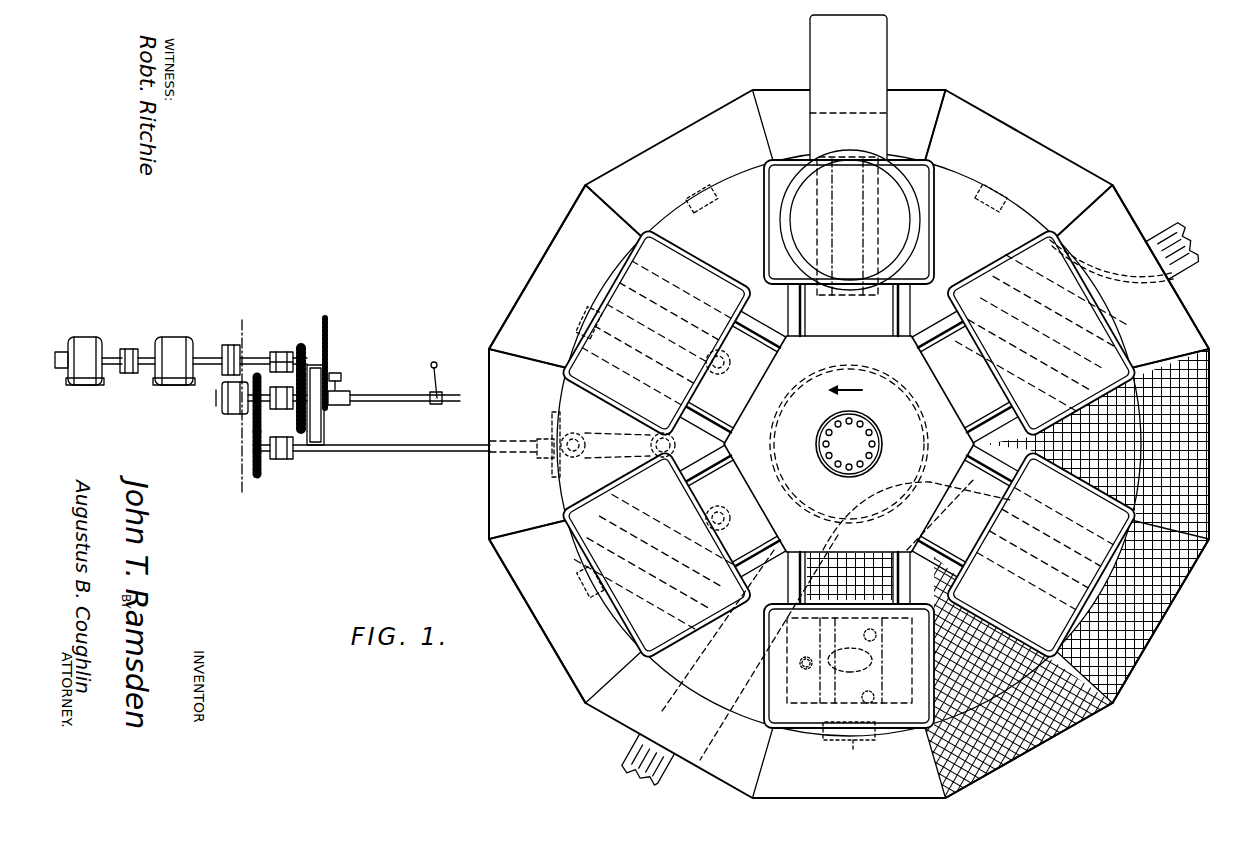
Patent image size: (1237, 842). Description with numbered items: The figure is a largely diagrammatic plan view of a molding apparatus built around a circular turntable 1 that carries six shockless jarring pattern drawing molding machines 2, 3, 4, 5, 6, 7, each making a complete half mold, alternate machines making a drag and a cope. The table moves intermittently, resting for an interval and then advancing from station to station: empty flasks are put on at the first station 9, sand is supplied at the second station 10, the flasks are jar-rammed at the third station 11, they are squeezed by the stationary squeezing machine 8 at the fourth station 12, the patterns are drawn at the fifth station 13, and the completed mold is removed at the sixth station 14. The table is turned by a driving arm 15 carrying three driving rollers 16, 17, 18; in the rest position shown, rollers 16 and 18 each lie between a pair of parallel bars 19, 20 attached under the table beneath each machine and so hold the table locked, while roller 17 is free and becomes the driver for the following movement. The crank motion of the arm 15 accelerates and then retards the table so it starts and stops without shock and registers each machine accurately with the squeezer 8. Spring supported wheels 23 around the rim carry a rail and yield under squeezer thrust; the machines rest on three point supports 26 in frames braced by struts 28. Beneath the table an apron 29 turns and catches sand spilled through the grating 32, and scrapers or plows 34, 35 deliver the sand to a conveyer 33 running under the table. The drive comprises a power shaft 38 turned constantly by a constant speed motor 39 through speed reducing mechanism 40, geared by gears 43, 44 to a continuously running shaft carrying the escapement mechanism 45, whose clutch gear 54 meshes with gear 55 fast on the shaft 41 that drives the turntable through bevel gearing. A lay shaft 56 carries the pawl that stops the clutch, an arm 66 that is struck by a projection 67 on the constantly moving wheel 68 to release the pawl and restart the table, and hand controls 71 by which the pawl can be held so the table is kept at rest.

The turntable 1 is at (849, 444).
The molding machine 2 is at (1041, 554).
The molding machine 3 is at (1041, 333).
The molding machine 4 is at (849, 222).
The molding machine 5 is at (657, 332).
The molding machine 6 is at (651, 557).
The molding machine 7 is at (849, 666).
The squeezing machine 8 is at (848, 89).
The first station 9 is at (851, 760).
The second station 10 is at (1097, 526).
The third station 11 is at (1133, 276).
The fourth station 12 is at (916, 126).
The fifth station 13 is at (566, 276).
The sixth station 14 is at (590, 600).
The driving arm 15 is at (600, 452).
The driving roller 16 is at (726, 515).
The driving roller 17 is at (577, 438).
The driving roller 18 is at (729, 365).
The parallel bar 19 is at (695, 325).
The parallel bar 20 is at (625, 350).
The spring supported wheels 23 is at (706, 185).
The three point supports 26 is at (868, 640).
The struts 28 is at (789, 310).
The apron 29 is at (972, 328).
The grating 32 is at (1073, 703).
The conveyer 33 is at (1168, 238).
The scraper or plow 34 is at (1100, 262).
The scraper or plow 35 is at (940, 478).
The power shaft 38 is at (255, 355).
The constant speed motor 39 is at (87, 338).
The speed reducing mechanism 40 is at (167, 338).
The turntable drive shaft 41 is at (445, 452).
The gear 43 is at (300, 348).
The gear 44 is at (296, 420).
The escapement mechanism 45 is at (225, 415).
The gear 54 is at (253, 400).
The gear 55 is at (252, 463).
The lay shaft 56 is at (380, 395).
The arm 66 is at (345, 392).
The projection 67 is at (340, 375).
The wheel 68 is at (329, 340).
The hand controls 71 is at (437, 380).